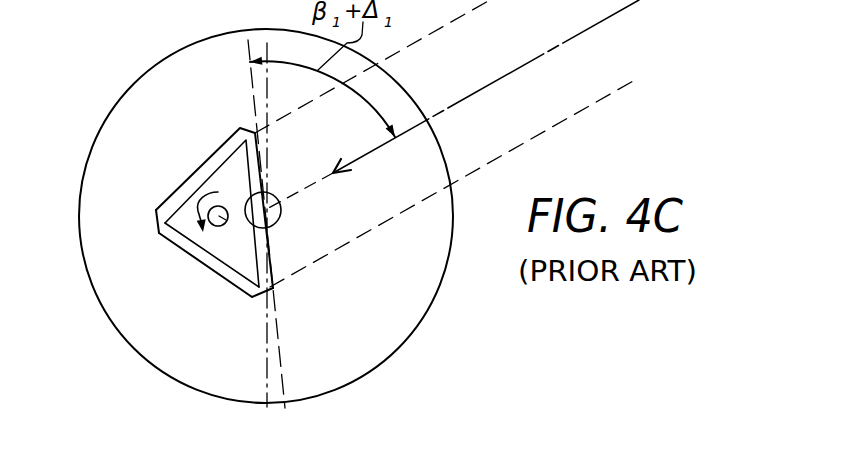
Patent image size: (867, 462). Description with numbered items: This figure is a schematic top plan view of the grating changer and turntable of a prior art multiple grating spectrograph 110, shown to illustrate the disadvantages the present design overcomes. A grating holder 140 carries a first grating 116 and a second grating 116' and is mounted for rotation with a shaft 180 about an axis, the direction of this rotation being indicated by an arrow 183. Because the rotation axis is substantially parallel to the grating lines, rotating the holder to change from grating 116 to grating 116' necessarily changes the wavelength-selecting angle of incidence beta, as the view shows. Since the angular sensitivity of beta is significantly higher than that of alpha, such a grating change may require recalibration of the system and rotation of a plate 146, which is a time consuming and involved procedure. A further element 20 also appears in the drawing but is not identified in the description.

The prior art spectrograph 110 is at (121, 73).
The grating holder 140 is at (232, 172).
The plate 146 is at (192, 153).
The arrow 183 is at (170, 197).
The grating 116' is at (178, 247).
The shaft 180 is at (218, 268).
The grating 116 is at (289, 212).
The laser beam 20 is at (352, 162).